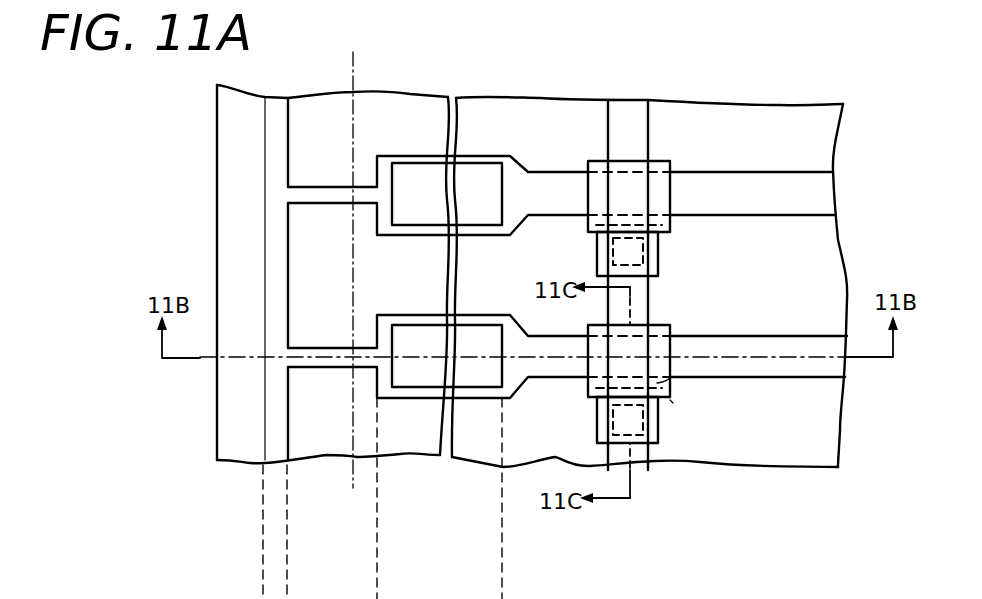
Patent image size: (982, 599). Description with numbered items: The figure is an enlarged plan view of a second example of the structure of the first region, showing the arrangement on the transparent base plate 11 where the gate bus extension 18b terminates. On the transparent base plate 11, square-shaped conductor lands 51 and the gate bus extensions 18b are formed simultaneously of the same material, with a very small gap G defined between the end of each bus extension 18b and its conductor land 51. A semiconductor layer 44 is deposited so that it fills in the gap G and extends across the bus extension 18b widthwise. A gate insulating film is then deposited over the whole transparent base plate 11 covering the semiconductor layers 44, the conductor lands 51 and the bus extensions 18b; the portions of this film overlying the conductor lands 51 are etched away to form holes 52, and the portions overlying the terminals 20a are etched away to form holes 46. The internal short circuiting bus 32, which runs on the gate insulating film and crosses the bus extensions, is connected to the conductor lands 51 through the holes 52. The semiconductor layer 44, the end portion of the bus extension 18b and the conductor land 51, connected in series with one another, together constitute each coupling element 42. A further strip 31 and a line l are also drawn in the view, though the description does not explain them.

The transparent base plate 11 is at (217, 177).
The scanning line 31 is at (282, 103).
The line l is at (357, 80).
The terminal 20a is at (428, 150).
The hole 46 is at (493, 180).
The gate bus extension 18b is at (727, 180).
The semiconductor layer 44 is at (601, 161).
The internal short circuiting bus 32 is at (632, 110).
The conductor land 51 is at (660, 267).
The hole 52 is at (635, 262).
The gap G is at (657, 383).
The coupling element 42 is at (676, 404).